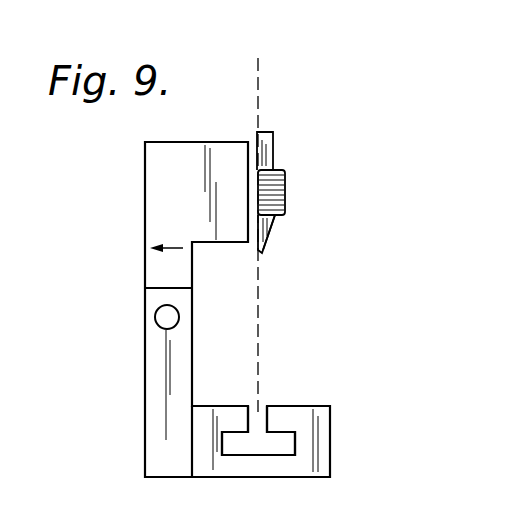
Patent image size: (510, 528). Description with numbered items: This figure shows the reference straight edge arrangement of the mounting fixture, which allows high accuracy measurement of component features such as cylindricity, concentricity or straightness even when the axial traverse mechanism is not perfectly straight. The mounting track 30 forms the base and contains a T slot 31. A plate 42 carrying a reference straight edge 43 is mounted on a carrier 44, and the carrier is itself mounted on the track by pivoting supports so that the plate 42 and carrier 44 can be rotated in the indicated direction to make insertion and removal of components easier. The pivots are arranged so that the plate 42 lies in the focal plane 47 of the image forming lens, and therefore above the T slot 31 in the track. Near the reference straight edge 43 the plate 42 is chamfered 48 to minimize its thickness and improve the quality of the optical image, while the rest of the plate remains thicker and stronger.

The mounting track 30 is at (320, 433).
The T slot 31 is at (259, 449).
The plate 42 is at (274, 145).
The reference straight edge 43 is at (262, 255).
The carrier 44 is at (250, 148).
The focal plane 47 is at (258, 59).
The chamfer 48 is at (266, 248).